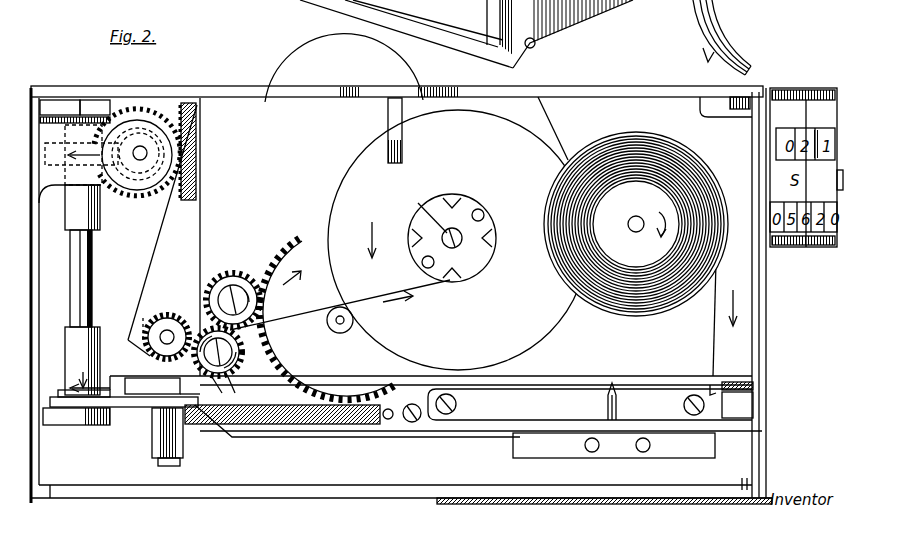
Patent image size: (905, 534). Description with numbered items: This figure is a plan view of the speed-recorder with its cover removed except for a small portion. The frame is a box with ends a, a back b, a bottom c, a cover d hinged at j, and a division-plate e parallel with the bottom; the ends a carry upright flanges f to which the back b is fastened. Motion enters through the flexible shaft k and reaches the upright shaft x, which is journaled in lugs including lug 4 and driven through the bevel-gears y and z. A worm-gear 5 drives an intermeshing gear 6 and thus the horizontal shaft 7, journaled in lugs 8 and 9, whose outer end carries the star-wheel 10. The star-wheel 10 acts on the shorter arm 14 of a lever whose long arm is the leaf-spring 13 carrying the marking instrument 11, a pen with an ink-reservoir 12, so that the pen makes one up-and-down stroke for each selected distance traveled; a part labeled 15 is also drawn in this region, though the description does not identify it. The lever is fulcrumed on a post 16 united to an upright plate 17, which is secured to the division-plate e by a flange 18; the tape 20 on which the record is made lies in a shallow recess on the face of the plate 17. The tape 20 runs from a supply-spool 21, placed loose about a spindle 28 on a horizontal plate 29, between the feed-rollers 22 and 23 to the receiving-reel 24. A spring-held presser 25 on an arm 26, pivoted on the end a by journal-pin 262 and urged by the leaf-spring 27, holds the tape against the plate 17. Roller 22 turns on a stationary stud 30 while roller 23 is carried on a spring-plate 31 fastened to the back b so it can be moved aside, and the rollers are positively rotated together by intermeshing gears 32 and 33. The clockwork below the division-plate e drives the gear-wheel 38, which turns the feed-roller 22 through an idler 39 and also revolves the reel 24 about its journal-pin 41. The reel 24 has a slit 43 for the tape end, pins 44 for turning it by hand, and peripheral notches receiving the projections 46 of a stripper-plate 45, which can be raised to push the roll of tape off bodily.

The lug 4 is at (87, 199).
The worm-gear 5 is at (137, 155).
The intermeshing gear 6 is at (81, 154).
The horizontal shaft 7 is at (70, 262).
The lug 8 is at (93, 108).
The lug 9 is at (62, 415).
The star-wheel 10 is at (70, 392).
The marking instrument 11 is at (620, 413).
The ink-reservoir 12 is at (614, 445).
The leaf-spring 13 is at (478, 438).
The shorter arm 14 is at (128, 412).
The spring 15 is at (300, 430).
The post 16 is at (155, 384).
The upright plate 17 is at (582, 380).
The flange 18 is at (590, 404).
The tape 20 is at (296, 315).
The supply-spool 21 is at (642, 210).
The feed-roller 22 is at (321, 319).
The feed-roller 23 is at (170, 312).
The receiving-reel 24 is at (452, 238).
The spring-held presser 25 is at (726, 380).
The arm 26 is at (737, 405).
The leaf-spring 27 is at (758, 368).
The spindle 28 is at (636, 232).
The horizontal plate 29 is at (636, 233).
The stationary stud 30 is at (218, 352).
The spring-plate 31 is at (150, 278).
The intermeshing gear 32 is at (237, 391).
The intermeshing gear 33 is at (150, 357).
The gear-wheel 38 is at (340, 337).
The idler 39 is at (240, 278).
The journal-pin 41 is at (442, 235).
The slit 43 is at (433, 208).
The pins 44 is at (422, 268).
The stripper-plate 45 is at (458, 240).
The projections 46 is at (452, 284).
The journal-pin 262 is at (712, 385).
The ends a is at (41, 298).
The back b is at (578, 90).
The bottom c is at (337, 490).
The cover d is at (545, 498).
The division-plate e is at (297, 329).
The upright flanges f is at (50, 110).
The hinge j is at (535, 48).
The flexible shaft k is at (710, 20).
The upright shaft x is at (138, 158).
The bevel-gear y is at (186, 200).
The bevel-gear z is at (150, 196).